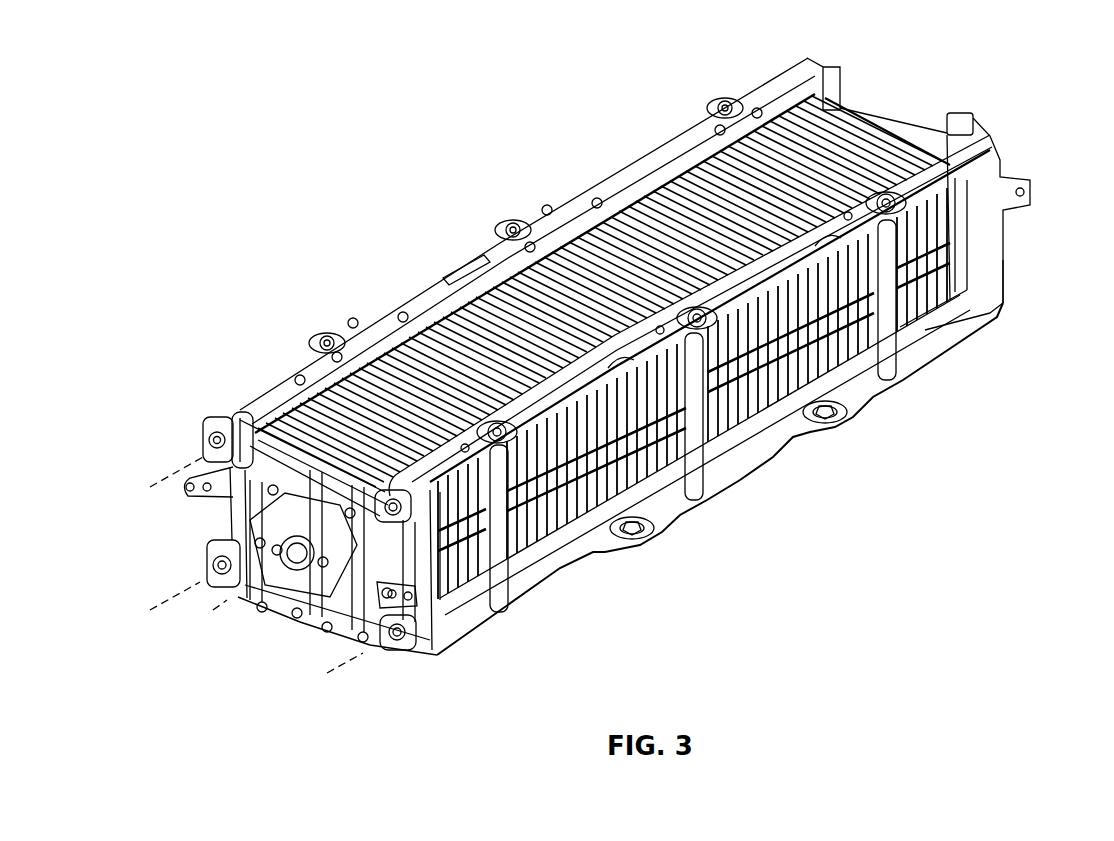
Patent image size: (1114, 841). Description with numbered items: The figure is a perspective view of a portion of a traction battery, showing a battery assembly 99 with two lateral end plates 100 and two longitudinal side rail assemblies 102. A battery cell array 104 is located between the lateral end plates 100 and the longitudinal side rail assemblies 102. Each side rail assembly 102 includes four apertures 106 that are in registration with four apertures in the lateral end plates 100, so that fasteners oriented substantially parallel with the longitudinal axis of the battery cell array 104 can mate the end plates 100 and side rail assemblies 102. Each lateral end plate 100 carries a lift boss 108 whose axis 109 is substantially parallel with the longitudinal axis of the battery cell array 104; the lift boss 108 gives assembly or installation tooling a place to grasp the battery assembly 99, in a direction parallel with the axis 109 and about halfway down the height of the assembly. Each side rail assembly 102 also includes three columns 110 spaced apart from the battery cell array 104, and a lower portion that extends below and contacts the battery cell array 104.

The battery assembly 99 is at (622, 368).
The lateral end plate 100 is at (622, 368).
The longitudinal side rail assembly 102 is at (808, 62).
The battery cell array 104 is at (590, 262).
The aperture 106 is at (215, 436).
The lift boss 108 is at (317, 590).
The axis 109 is at (232, 598).
The column 110 is at (508, 602).